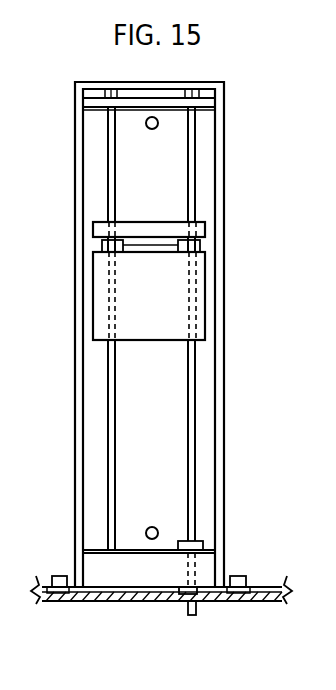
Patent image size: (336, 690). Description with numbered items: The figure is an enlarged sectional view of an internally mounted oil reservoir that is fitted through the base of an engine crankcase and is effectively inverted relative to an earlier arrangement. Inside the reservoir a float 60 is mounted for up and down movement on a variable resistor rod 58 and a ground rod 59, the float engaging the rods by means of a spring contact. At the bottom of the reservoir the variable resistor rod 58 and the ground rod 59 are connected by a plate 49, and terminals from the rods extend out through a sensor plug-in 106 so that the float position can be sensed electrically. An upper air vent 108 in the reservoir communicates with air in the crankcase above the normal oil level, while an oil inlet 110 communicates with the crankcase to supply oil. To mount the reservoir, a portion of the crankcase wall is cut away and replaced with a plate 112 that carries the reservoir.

The plate 49 is at (282, 66).
The variable resistor rod 58 is at (190, 170).
The ground rod 59 is at (110, 424).
The float 60 is at (280, 302).
The sensor plug-in 106 is at (211, 602).
The upper air vent 108 is at (146, 124).
The oil inlet 110 is at (158, 533).
The plate 112 is at (120, 590).